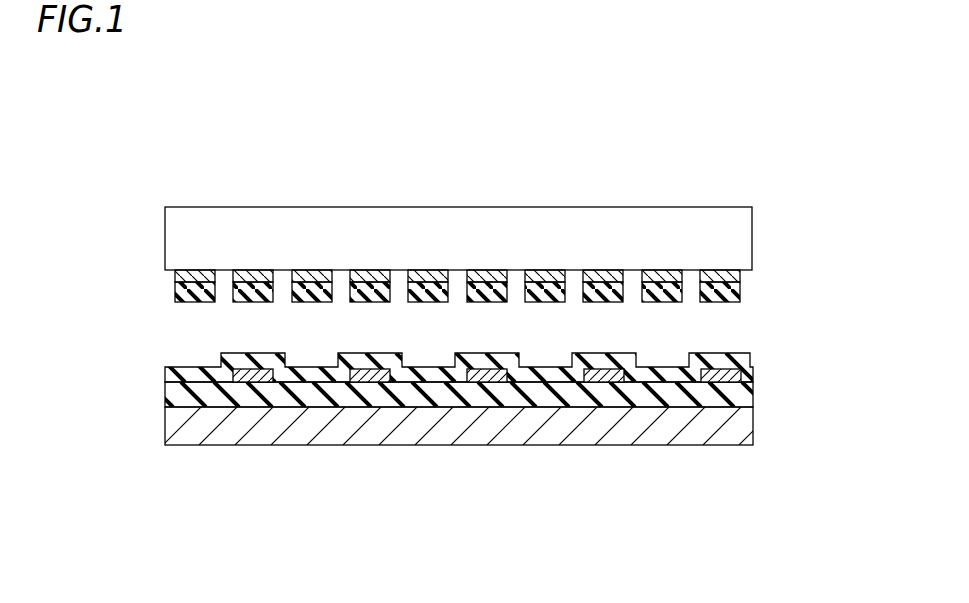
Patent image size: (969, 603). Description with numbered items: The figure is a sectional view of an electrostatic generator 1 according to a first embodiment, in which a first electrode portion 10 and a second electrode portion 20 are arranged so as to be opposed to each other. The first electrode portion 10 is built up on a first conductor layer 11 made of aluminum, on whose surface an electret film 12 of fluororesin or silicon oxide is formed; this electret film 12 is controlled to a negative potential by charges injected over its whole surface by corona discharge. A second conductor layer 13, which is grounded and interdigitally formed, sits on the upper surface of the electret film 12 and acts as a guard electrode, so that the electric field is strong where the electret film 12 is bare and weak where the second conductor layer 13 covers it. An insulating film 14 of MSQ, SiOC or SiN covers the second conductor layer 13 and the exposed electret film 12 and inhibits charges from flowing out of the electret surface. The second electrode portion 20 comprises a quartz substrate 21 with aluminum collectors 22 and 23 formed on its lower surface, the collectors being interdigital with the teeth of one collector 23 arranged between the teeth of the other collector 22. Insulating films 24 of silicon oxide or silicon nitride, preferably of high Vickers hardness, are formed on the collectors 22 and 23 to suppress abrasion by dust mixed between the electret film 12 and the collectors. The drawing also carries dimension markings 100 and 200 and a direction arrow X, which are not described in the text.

The electrostatic generator 1 is at (791, 124).
The first electrode portion 10 is at (110, 343).
The first conductor layer 11 is at (545, 430).
The electret film 12 is at (430, 395).
The second conductor layer 13 is at (716, 375).
The insulating film 14 is at (310, 378).
The second electrode portion 20 is at (110, 182).
The substrate 21 is at (738, 223).
The collector 22 is at (657, 277).
The collector 23 is at (716, 285).
The insulating film 24 is at (427, 300).
The pitch dimension of substrate electrodes 100 is at (778, 365).
The pitch dimension of chip bumps 200 is at (778, 290).
The arrangement direction X is at (557, 117).